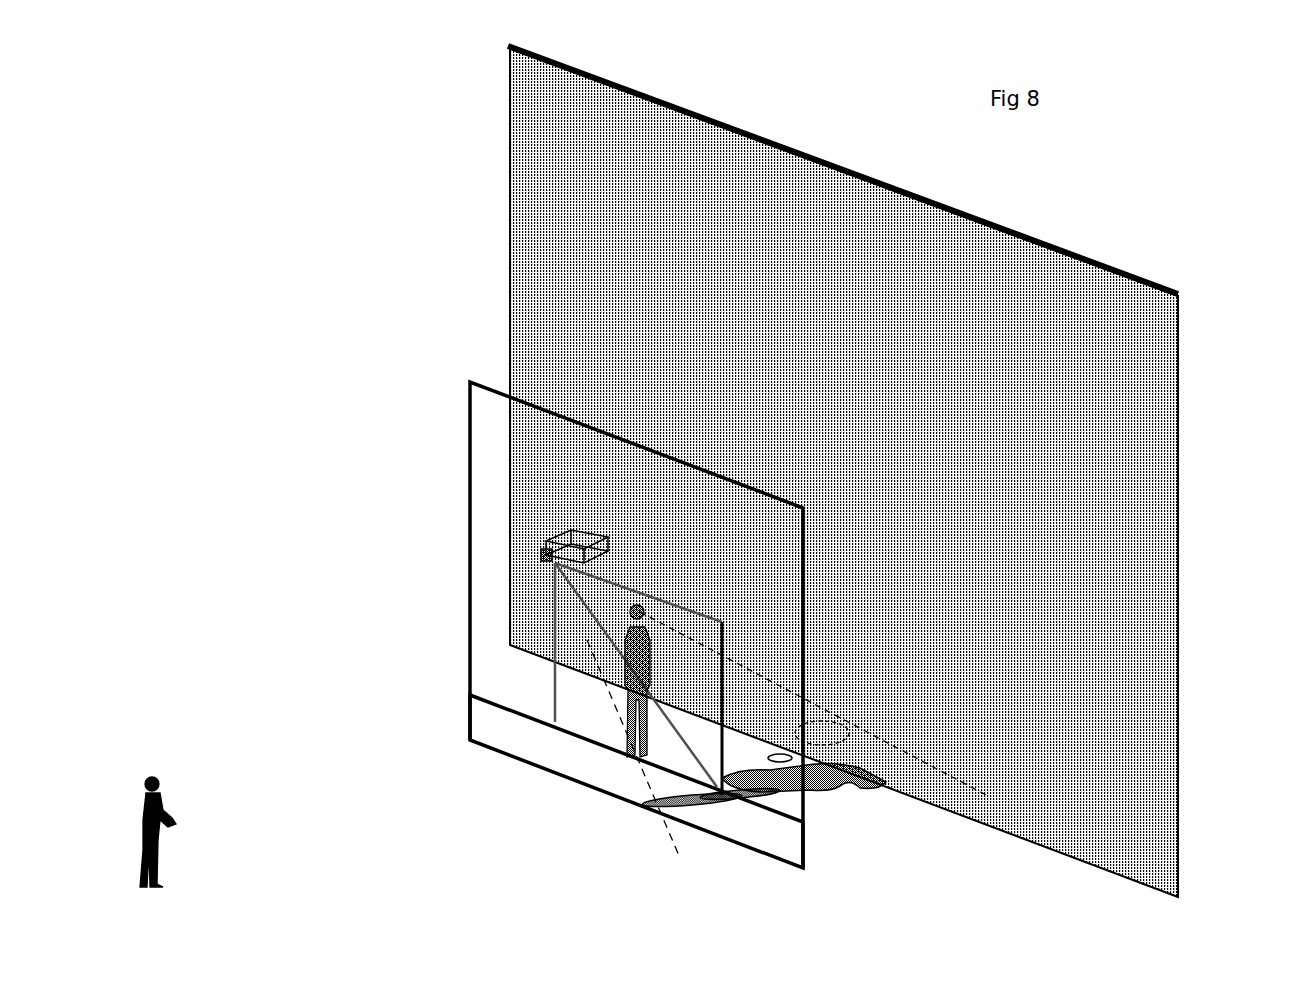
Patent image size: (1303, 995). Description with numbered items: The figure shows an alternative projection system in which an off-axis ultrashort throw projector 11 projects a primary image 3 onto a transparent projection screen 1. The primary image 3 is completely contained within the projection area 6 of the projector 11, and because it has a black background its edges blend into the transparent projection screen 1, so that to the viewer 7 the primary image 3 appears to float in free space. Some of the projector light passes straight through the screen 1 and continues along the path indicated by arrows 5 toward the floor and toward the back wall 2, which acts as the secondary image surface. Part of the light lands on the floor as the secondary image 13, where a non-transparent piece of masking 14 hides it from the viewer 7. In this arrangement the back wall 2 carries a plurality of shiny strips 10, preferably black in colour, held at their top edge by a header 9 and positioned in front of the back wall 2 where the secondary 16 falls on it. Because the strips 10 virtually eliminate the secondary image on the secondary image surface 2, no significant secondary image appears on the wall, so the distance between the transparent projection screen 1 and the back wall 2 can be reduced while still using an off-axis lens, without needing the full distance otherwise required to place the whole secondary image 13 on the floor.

The transparent projection screen 1 is at (470, 382).
The back wall 2 is at (1181, 487).
The primary image 3 is at (632, 618).
The arrows 5 is at (612, 697).
The projection area 6 is at (721, 748).
The viewer 7 is at (163, 782).
The header 9 is at (1150, 283).
The shiny strips 10 is at (717, 192).
The ultrashort throw projector 11 is at (565, 540).
The secondary image 13 is at (843, 786).
The masking 14 is at (492, 713).
The secondary 16 is at (867, 762).